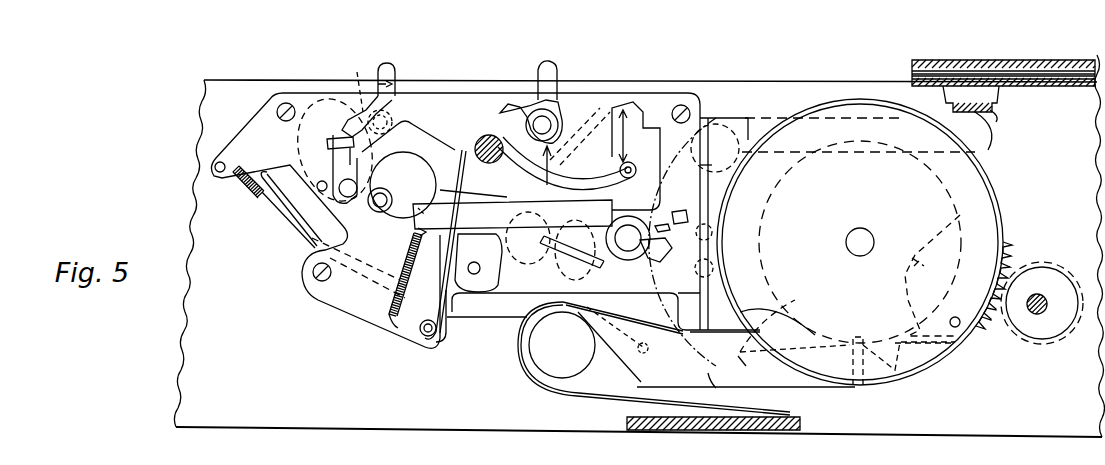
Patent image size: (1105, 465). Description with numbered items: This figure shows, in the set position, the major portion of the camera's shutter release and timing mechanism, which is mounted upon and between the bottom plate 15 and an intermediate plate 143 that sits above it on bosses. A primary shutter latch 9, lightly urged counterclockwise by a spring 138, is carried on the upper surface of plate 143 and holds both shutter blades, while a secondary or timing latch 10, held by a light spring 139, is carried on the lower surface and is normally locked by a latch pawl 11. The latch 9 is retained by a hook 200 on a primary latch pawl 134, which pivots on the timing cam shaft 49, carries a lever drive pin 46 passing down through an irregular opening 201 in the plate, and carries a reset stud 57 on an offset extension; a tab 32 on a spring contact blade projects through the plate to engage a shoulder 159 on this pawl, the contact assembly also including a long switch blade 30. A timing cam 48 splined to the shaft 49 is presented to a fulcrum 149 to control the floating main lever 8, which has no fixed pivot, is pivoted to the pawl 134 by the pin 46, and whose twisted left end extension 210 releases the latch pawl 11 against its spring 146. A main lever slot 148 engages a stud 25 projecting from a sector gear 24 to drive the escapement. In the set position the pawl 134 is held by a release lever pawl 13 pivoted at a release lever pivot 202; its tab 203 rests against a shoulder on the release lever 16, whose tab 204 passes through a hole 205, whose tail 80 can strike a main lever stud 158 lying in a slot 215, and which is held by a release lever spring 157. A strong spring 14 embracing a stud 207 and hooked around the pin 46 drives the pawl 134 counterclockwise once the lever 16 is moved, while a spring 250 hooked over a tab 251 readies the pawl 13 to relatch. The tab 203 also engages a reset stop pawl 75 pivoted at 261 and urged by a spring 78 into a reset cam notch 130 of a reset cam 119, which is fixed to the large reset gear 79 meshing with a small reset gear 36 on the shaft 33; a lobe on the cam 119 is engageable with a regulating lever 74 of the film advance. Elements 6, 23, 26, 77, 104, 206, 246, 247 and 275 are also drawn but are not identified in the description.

The bottom plate 15 is at (197, 413).
The primary latch pawl 134 is at (422, 98).
The long switch blade 30 is at (378, 248).
The latch pawl 11 is at (305, 142).
The secondary latch 10 is at (390, 70).
The light spring 139 is at (357, 74).
The timing cam 48 is at (394, 122).
The tab 32 is at (353, 151).
The shoulder 159 is at (338, 160).
The primary latch pawl reset stud 57 is at (350, 198).
The roller 23 is at (385, 193).
The hole 205 is at (416, 178).
The spring 146 is at (238, 186).
The left end extension 210 is at (280, 214).
The timing cam shaft 49 is at (476, 147).
The arm 104 is at (564, 163).
The tail 80 is at (445, 203).
The tab 204 is at (418, 207).
The hook 200 is at (515, 105).
The spring 138 is at (541, 100).
The primary shutter latch 9 is at (553, 74).
The sector gear 24 is at (590, 118).
The opening 201 is at (638, 124).
The lever drive pin 46 is at (620, 175).
The strong spring 14 is at (440, 280).
The release lever spring 157 is at (392, 300).
The slot 215 is at (452, 266).
The stud 207 is at (432, 338).
The main lever 8 is at (503, 312).
The fulcrum 149 is at (476, 262).
The main lever stud 158 is at (473, 275).
The cam 26 is at (527, 243).
The spring 250 is at (606, 236).
The tab 251 is at (575, 270).
The release lever pivot 202 is at (660, 257).
The pawl tip 6 is at (662, 226).
The main lever slot 148 is at (682, 210).
The intermediate plate 143 is at (689, 107).
The bracket 206 is at (712, 122).
The release lever 16 is at (750, 120).
The release lever pawl 13 is at (716, 165).
The sector gear stud 25 is at (720, 218).
The tab 203 is at (718, 238).
The large reset gear 79 is at (987, 205).
The rail 247 is at (945, 104).
The bracket 246 is at (996, 113).
The small reset gear 36 is at (1060, 285).
The shaft 33 is at (1046, 308).
The pin 275 is at (950, 318).
The reset cam 119 is at (922, 264).
The reset cam notch 130 is at (862, 336).
The regulating lever 74 is at (755, 358).
The reset stop pawl 75 is at (741, 401).
The spring 78 is at (660, 393).
The belt 77 is at (600, 404).
The pivot 261 is at (585, 335).